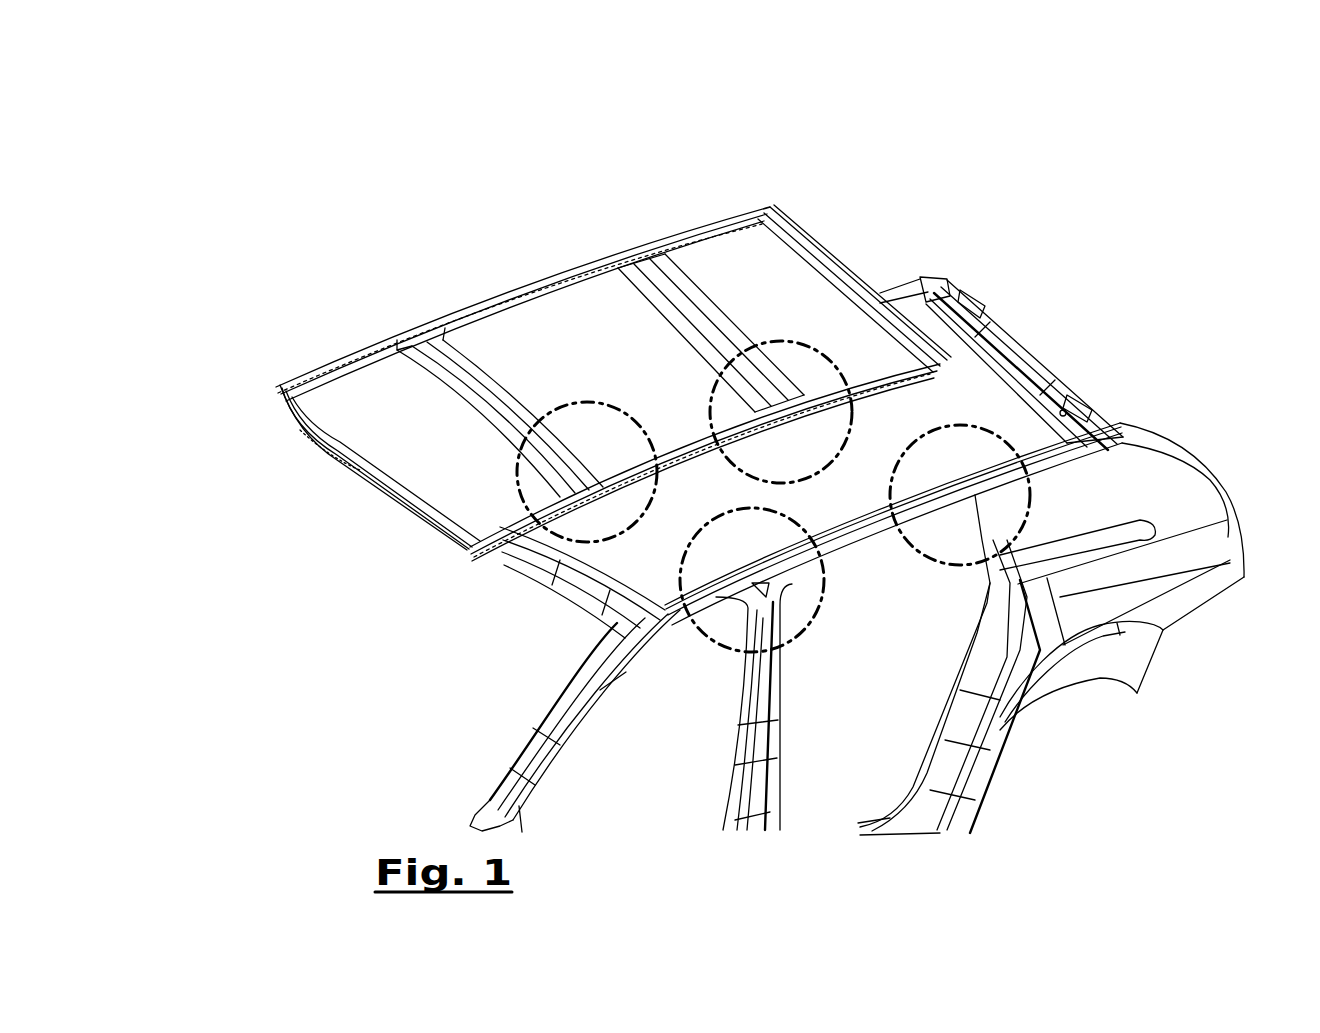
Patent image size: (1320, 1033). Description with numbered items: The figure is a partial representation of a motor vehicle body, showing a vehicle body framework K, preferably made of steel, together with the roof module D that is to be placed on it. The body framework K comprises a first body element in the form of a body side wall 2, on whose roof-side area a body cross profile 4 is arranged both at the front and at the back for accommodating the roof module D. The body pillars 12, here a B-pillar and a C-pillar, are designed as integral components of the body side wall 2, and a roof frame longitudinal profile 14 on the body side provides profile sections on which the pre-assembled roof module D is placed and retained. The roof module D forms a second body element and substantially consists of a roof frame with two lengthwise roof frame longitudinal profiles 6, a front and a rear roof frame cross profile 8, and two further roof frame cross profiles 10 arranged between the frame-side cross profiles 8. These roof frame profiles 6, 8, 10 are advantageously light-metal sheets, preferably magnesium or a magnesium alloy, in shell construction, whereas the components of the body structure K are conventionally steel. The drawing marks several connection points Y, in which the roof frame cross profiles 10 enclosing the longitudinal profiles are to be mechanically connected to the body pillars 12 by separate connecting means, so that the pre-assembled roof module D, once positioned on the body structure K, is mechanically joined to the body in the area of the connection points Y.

The body side wall 2 is at (1182, 592).
The body cross profile 4 is at (1020, 360).
The roof frame longitudinal profile 6 is at (488, 300).
The roof frame cross profile 8 is at (807, 240).
The roof frame cross profile 10 is at (523, 410).
The body pillar 12 is at (757, 688).
The roof frame longitudinal profile on the body side 14 is at (865, 527).
The roof module D is at (613, 327).
The vehicle body framework K is at (870, 538).
The connection point Y is at (837, 453).